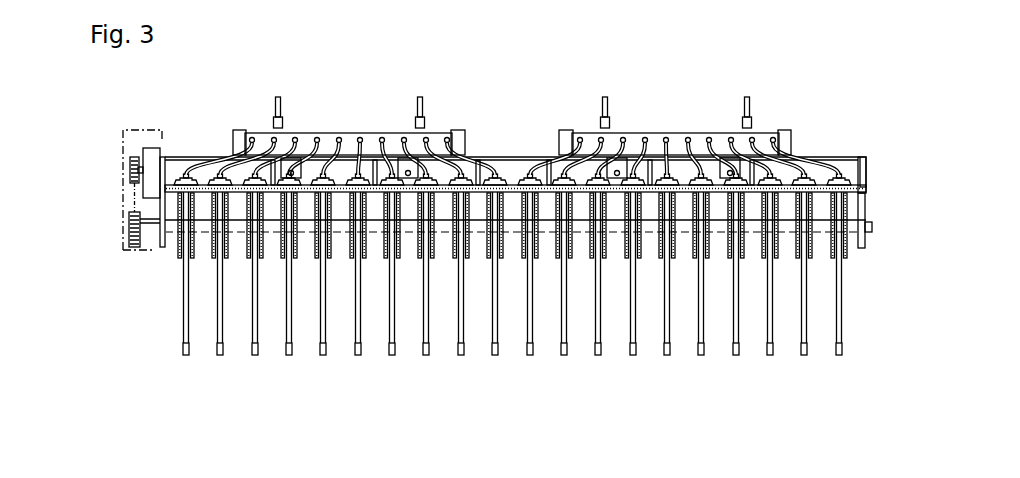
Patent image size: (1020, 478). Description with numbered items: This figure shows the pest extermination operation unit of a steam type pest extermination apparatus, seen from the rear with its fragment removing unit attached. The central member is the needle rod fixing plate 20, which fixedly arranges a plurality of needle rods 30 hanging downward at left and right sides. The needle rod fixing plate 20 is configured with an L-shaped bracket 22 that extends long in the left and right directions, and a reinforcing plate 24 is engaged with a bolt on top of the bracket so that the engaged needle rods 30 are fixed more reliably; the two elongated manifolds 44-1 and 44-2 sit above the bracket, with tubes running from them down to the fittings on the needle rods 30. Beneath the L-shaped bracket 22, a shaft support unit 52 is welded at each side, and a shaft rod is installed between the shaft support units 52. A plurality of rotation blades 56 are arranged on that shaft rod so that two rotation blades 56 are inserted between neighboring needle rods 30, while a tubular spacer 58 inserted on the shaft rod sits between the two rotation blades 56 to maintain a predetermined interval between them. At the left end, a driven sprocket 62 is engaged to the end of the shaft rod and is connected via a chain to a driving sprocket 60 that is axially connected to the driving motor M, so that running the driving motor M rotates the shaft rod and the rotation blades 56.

The needle rod fixing plate 20 is at (872, 176).
The L-shaped bracket 22 is at (858, 165).
The reinforcing plate 24 is at (525, 176).
The needle rod 30 is at (322, 342).
The first manifold 44-1 is at (370, 134).
The second manifold 44-2 is at (655, 140).
The shaft support unit 52 is at (163, 250).
The rotation blade 56 is at (282, 252).
The tubular spacer 58 is at (237, 228).
The driving sprocket 60 is at (130, 176).
The driven sprocket 62 is at (128, 226).
The driving motor M is at (150, 148).